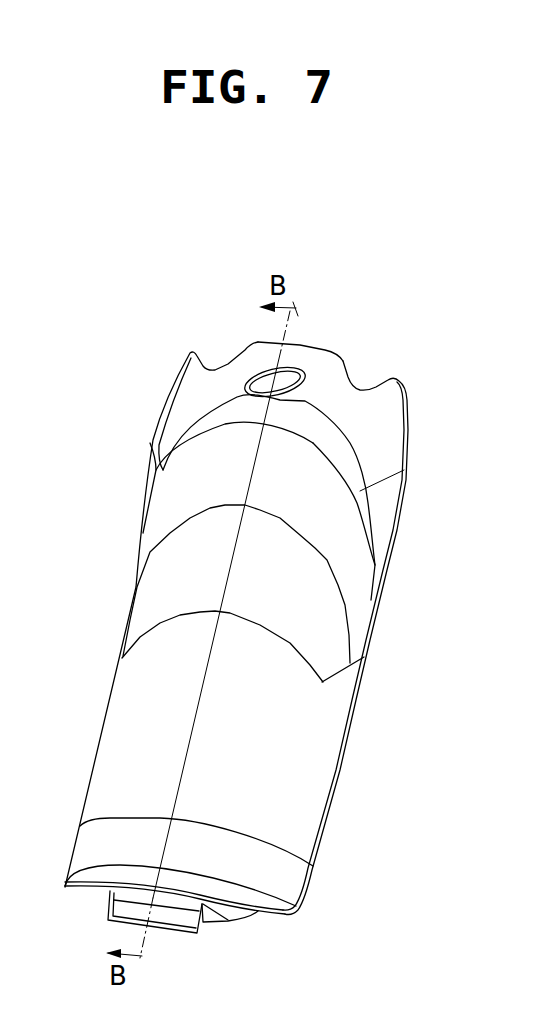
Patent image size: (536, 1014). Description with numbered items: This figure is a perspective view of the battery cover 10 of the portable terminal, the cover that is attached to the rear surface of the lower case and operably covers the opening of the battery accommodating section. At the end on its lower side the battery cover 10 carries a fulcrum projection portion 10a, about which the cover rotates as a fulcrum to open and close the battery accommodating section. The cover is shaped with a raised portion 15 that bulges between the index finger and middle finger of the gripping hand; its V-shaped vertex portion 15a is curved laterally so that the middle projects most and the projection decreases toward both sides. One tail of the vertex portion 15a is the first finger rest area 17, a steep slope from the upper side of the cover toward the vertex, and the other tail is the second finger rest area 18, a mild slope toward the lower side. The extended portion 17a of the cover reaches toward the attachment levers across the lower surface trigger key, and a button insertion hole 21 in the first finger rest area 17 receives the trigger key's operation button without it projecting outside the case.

The battery cover 10 is at (316, 704).
The fulcrum projection portion 10a is at (176, 916).
The raised portion 15 is at (232, 452).
The vertex portion 15a is at (310, 439).
The first finger rest area 17 is at (218, 411).
The extended portion 17a is at (268, 352).
The second finger rest area 18 is at (264, 647).
The button insertion hole 21 is at (283, 400).